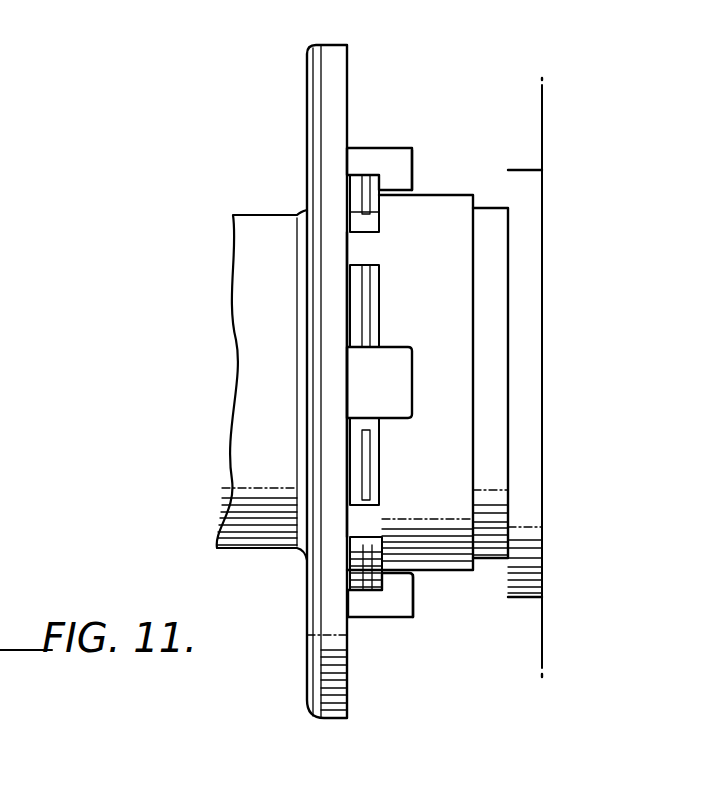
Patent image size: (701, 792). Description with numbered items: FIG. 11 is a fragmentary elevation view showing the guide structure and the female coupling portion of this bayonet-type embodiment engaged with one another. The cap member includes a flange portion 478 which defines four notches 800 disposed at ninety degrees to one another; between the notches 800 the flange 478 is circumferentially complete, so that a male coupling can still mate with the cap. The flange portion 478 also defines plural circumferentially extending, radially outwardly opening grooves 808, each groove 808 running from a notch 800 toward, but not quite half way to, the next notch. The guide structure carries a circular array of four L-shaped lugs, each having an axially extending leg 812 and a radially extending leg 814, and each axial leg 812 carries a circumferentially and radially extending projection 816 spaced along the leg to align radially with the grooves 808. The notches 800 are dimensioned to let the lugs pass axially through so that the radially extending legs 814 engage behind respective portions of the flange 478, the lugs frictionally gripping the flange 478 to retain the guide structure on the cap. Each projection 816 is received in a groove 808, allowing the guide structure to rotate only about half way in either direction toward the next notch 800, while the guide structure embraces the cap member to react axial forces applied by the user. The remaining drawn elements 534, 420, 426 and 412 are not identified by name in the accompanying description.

The plate 534 is at (345, 52).
The hub 420 is at (251, 200).
The notches 800 is at (368, 248).
The shaft member 426 is at (546, 375).
The axis line 412 is at (542, 112).
The axially extending leg 812 is at (374, 148).
The radially extending leg 814 is at (413, 163).
The grooves 808 is at (365, 206).
The flange portion 478 is at (378, 472).
The projection 816 is at (366, 592).